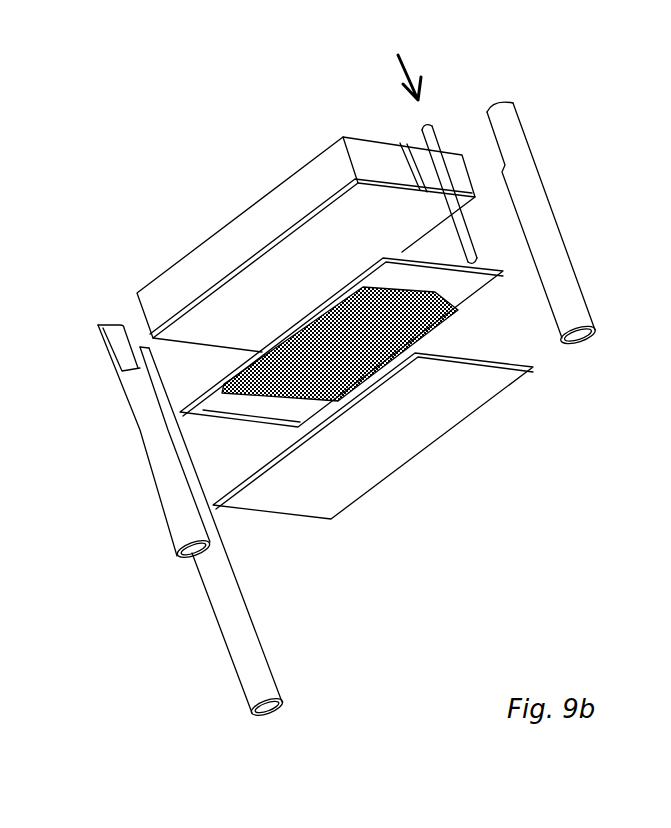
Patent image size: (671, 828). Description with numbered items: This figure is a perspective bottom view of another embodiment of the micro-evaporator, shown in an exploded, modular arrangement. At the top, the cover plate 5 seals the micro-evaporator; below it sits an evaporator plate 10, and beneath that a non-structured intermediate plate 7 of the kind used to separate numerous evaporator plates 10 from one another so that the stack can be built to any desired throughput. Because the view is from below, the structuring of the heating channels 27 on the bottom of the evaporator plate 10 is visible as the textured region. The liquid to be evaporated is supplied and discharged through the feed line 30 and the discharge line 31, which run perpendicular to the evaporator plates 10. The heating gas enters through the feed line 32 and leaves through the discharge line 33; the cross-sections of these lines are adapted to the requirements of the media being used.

The cover plate 5 is at (288, 217).
The intermediate plate 7 is at (459, 405).
The evaporator plate 10 is at (176, 408).
The heating channels 27 is at (460, 311).
The feed line 30 is at (428, 124).
The discharge line 31 is at (250, 657).
The feed line 32 is at (562, 280).
The discharge line 33 is at (178, 513).